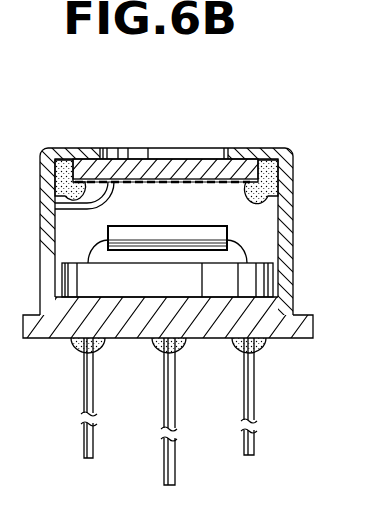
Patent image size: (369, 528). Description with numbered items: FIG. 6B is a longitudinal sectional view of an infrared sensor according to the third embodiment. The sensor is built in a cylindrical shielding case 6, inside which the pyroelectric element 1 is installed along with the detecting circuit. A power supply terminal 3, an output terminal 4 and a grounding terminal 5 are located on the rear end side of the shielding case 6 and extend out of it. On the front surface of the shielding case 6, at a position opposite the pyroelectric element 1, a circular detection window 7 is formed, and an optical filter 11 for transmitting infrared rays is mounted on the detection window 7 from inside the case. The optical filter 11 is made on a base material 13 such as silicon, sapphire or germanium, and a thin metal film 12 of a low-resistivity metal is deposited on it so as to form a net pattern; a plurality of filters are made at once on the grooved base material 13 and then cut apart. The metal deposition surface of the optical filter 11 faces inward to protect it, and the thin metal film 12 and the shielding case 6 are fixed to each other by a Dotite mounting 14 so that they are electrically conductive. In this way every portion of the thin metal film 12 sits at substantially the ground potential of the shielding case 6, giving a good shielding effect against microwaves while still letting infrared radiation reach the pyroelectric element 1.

The pyroelectric element 1 is at (218, 231).
The power supply terminal 3 is at (85, 392).
The output terminal 4 is at (166, 388).
The grounding terminal 5 is at (246, 401).
The shielding case 6 is at (292, 259).
The detection window 7 is at (226, 150).
The optical filter 11 is at (145, 153).
The thin metal film 12 is at (55, 205).
The base material 13 is at (188, 162).
The Dotite mounting 14 is at (62, 168).